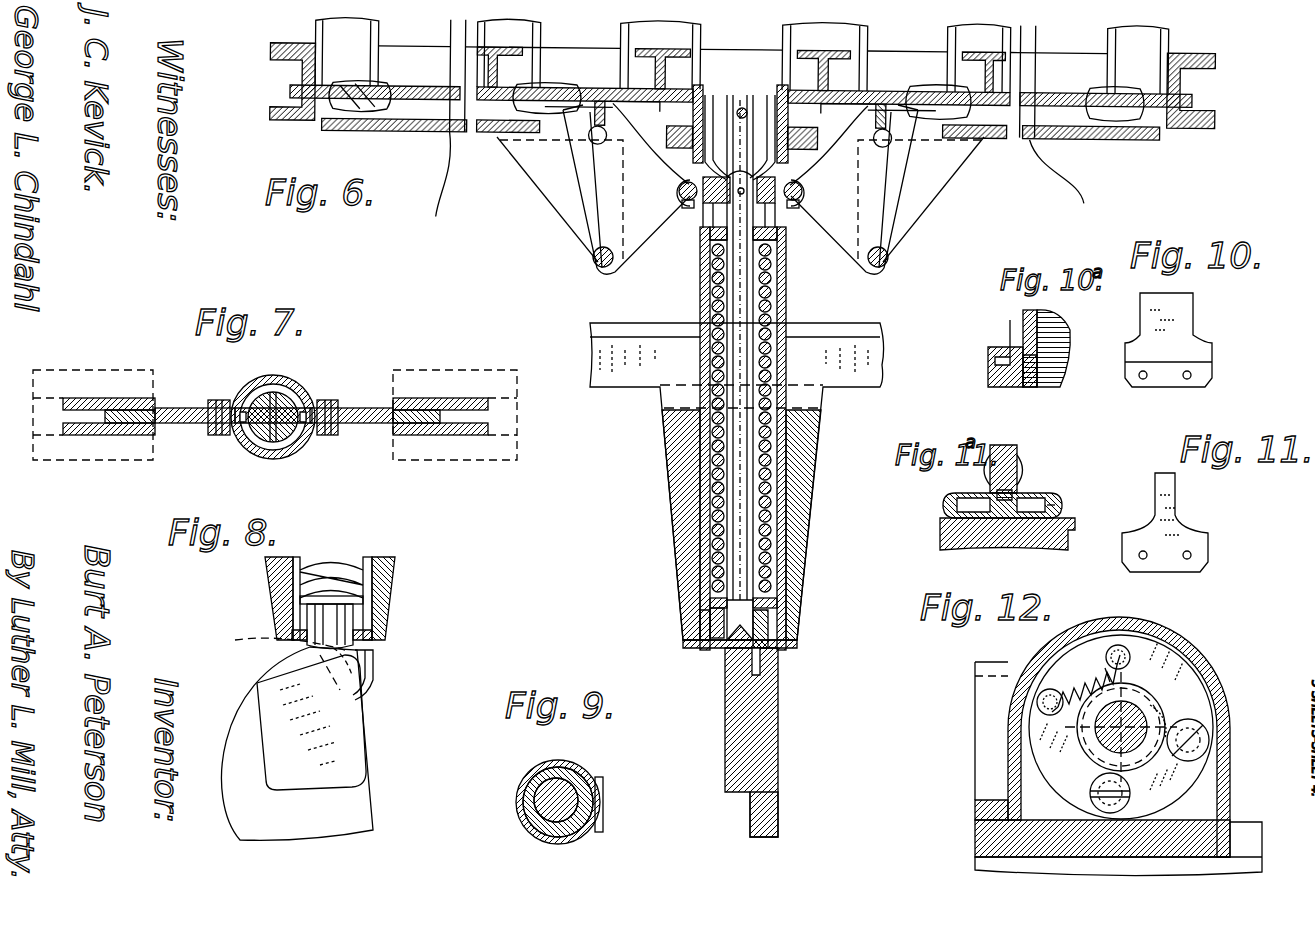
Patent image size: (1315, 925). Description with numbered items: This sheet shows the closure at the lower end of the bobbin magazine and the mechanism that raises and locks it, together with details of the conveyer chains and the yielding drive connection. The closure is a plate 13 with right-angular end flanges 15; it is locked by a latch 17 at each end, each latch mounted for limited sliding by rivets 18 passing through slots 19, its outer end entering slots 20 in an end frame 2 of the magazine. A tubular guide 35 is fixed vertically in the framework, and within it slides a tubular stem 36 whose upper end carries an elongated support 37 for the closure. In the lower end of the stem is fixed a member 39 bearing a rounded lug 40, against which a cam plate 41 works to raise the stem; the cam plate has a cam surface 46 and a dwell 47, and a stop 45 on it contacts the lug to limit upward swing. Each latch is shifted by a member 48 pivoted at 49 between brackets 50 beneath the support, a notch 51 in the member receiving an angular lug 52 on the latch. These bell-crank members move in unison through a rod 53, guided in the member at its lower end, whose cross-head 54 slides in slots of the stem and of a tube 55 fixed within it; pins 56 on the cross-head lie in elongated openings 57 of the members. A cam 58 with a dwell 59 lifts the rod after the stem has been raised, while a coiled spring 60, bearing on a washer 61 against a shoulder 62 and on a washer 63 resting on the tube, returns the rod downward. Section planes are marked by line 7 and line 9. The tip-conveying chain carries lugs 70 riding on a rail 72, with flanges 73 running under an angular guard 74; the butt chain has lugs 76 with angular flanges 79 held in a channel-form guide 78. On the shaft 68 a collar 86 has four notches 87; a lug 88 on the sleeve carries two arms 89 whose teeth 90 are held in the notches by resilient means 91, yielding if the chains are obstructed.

In FIG. 6, the end frame 2 is at (270, 45).
In FIG. 6, the section line 7 7 is at (520, 188).
In FIG. 6, the section line 9 9 is at (683, 627).
In FIG. 6, the plate 13 is at (395, 92).
In FIG. 6, the end flanges 15 is at (322, 128).
In FIG. 6, the latch 17 is at (425, 131).
In FIG. 6, the rivets 18 is at (547, 85).
In FIG. 6, the slots 19 is at (1145, 44).
In FIG. 6, the slots 20 is at (292, 90).
In FIG. 6, the tubular guide 35 is at (805, 496).
In FIG. 8, the tubular guide 35 is at (395, 565).
In FIG. 6, the tubular stem 36 is at (700, 290).
In FIG. 7, the tubular stem 36 is at (300, 385).
In FIG. 8, the tubular stem 36 is at (368, 557).
In FIG. 9, the tubular stem 36 is at (525, 770).
In FIG. 6, the support 37 is at (755, 193).
In FIG. 6, the member 39 is at (707, 648).
In FIG. 9, the member 39 is at (522, 800).
In FIG. 6, the rounded lug 40 is at (782, 662).
In FIG. 8, the rounded lug 40 is at (311, 722).
In FIG. 9, the rounded lug 40 is at (605, 778).
In FIG. 6, the cam plate 41 is at (778, 810).
In FIG. 8, the cam plate 41 is at (365, 805).
In FIG. 8, the stop 45 is at (372, 670).
In FIG. 8, the cam surface 46 is at (232, 812).
In FIG. 8, the dwell 47 is at (266, 661).
In FIG. 6, the member 48 is at (740, 189).
In FIG. 7, the member 48 is at (180, 405).
In FIG. 6, the pivot 49 is at (603, 262).
In FIG. 6, the brackets 50 is at (565, 220).
In FIG. 7, the brackets 50 is at (95, 398).
In FIG. 6, the notch 51 is at (595, 141).
In FIG. 6, the angular lug 52 is at (605, 102).
In FIG. 6, the rod 53 is at (745, 470).
In FIG. 9, the rod 53 is at (540, 822).
In FIG. 6, the cross-head 54 is at (712, 205).
In FIG. 7, the cross-head 54 is at (305, 405).
In FIG. 6, the tube 55 is at (770, 140).
In FIG. 7, the tube 55 is at (280, 392).
In FIG. 6, the pins 56 is at (678, 190).
In FIG. 7, the pins 56 is at (216, 437).
In FIG. 6, the elongated openings 57 is at (678, 204).
In FIG. 8, the cam 58 is at (292, 648).
In FIG. 6, the dwell 59 is at (728, 650).
In FIG. 8, the dwell 59 is at (350, 655).
In FIG. 6, the coiled spring 60 is at (790, 440).
In FIG. 8, the coiled spring 60 is at (320, 560).
In FIG. 6, the washer 61 is at (790, 593).
In FIG. 8, the washer 61 is at (300, 590).
In FIG. 6, the shoulder 62 is at (715, 605).
In FIG. 8, the shoulder 62 is at (315, 600).
In FIG. 6, the washer 63 is at (786, 243).
In FIG. 12, the shaft 68 is at (1150, 718).
In FIG. 10A, the lugs 70 is at (1020, 312).
In FIG. 10, the lugs 70 is at (1168, 340).
In FIG. 10A, the rail 72 is at (1060, 388).
In FIG. 10A, the flanges 73 is at (988, 356).
In FIG. 10, the flanges 73 is at (1145, 390).
In FIG. 10A, the angular guard 74 is at (1010, 348).
In FIG. 11A, the lugs 76 is at (1004, 448).
In FIG. 11, the lugs 76 is at (1158, 530).
In FIG. 11A, the channel-form guide 78 is at (1055, 497).
In FIG. 11A, the angular flanges 79 is at (958, 505).
In FIG. 11, the angular flanges 79 is at (1185, 572).
In FIG. 12, the collar 86 is at (1135, 712).
In FIG. 12, the notches 87 is at (1115, 745).
In FIG. 12, the lug 88 is at (1183, 775).
In FIG. 12, the arms 89 is at (1038, 726).
In FIG. 12, the teeth 90 is at (1080, 748).
In FIG. 12, the resilient means 91 is at (1078, 682).